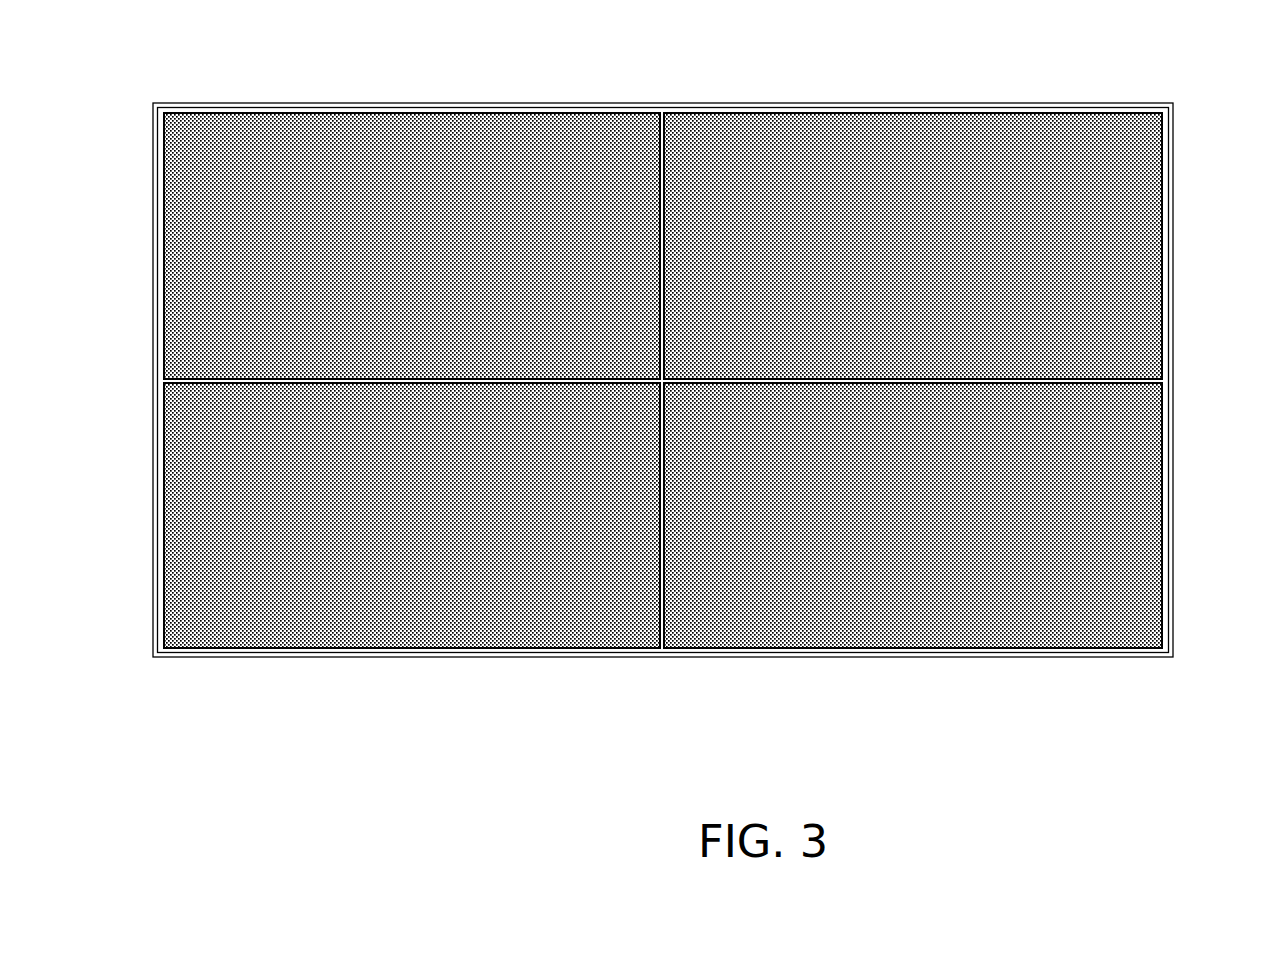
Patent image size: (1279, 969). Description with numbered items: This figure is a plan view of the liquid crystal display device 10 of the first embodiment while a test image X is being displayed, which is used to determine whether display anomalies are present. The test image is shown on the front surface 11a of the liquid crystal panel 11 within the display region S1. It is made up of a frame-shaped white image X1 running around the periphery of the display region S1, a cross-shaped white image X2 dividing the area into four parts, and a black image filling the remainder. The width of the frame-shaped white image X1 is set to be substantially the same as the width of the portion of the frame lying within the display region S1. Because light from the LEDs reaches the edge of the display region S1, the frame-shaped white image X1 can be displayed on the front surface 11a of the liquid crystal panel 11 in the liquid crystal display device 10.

The liquid crystal display device 10 is at (701, 397).
The front surface 11a is at (663, 413).
The liquid crystal panel 11 is at (663, 413).
The display region S1 is at (569, 620).
The frame-shaped white image X1 is at (707, 383).
The cross-shaped white image X2 is at (1145, 380).